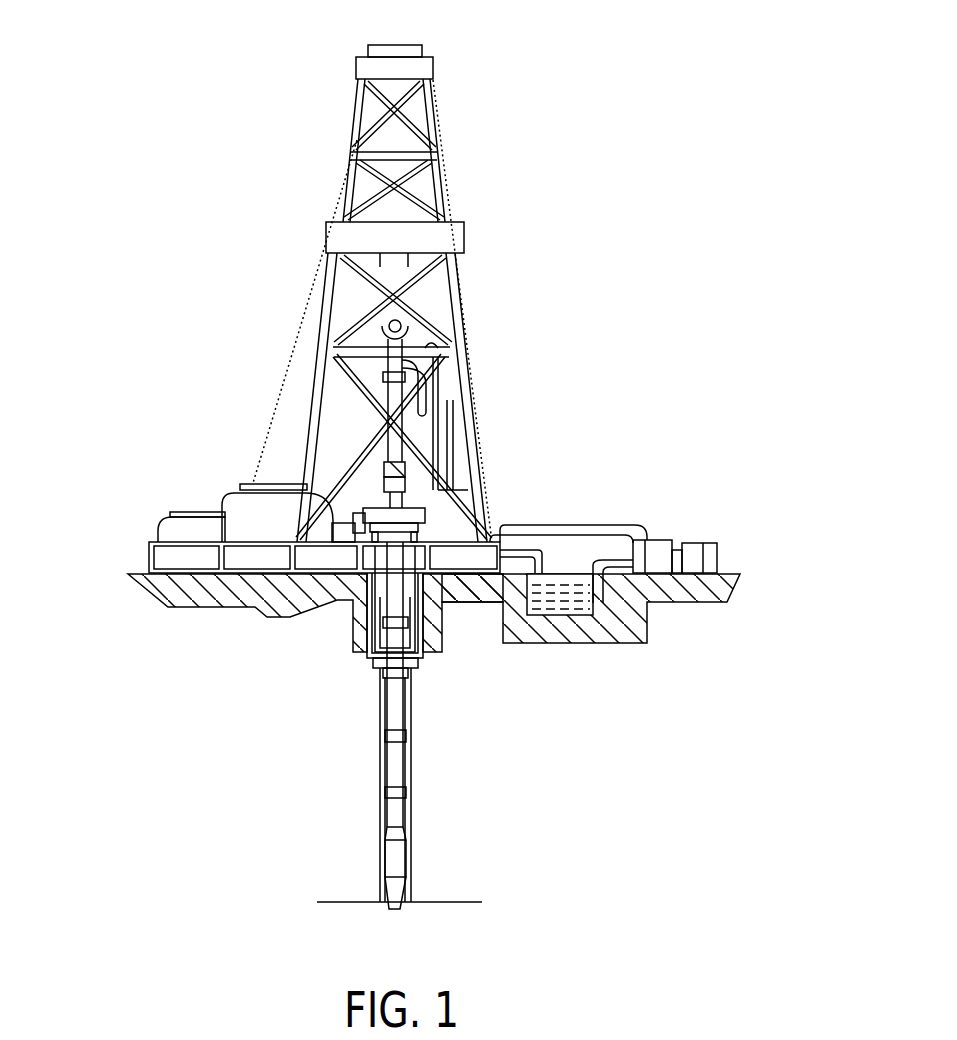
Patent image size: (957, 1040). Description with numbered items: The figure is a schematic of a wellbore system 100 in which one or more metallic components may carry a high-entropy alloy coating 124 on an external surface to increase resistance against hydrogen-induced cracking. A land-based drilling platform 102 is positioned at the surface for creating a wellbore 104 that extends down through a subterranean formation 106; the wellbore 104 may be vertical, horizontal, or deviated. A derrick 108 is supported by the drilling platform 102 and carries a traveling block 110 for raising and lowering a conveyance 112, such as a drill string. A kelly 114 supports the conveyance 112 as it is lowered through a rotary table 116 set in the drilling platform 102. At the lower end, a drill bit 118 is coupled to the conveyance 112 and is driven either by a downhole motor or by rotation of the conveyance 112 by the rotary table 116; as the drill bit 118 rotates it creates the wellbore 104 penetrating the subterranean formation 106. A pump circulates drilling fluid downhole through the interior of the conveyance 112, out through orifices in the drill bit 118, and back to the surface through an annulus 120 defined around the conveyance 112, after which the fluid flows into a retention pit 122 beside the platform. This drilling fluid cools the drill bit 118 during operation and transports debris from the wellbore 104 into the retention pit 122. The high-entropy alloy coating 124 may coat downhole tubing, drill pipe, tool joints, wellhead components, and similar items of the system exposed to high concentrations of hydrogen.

The wellbore system 100 is at (612, 93).
The drilling platform 102 is at (149, 558).
The wellbore 104 is at (415, 727).
The subterranean formation 106 is at (240, 752).
The derrick 108 is at (440, 146).
The traveling block 110 is at (388, 328).
The conveyance 112 is at (397, 706).
The kelly 114 is at (397, 421).
The rotary table 116 is at (405, 515).
The drill bit 118 is at (398, 892).
The annulus 120 is at (383, 710).
The retention pit 122 is at (580, 608).
The high-entropy alloy coating 124 is at (390, 867).